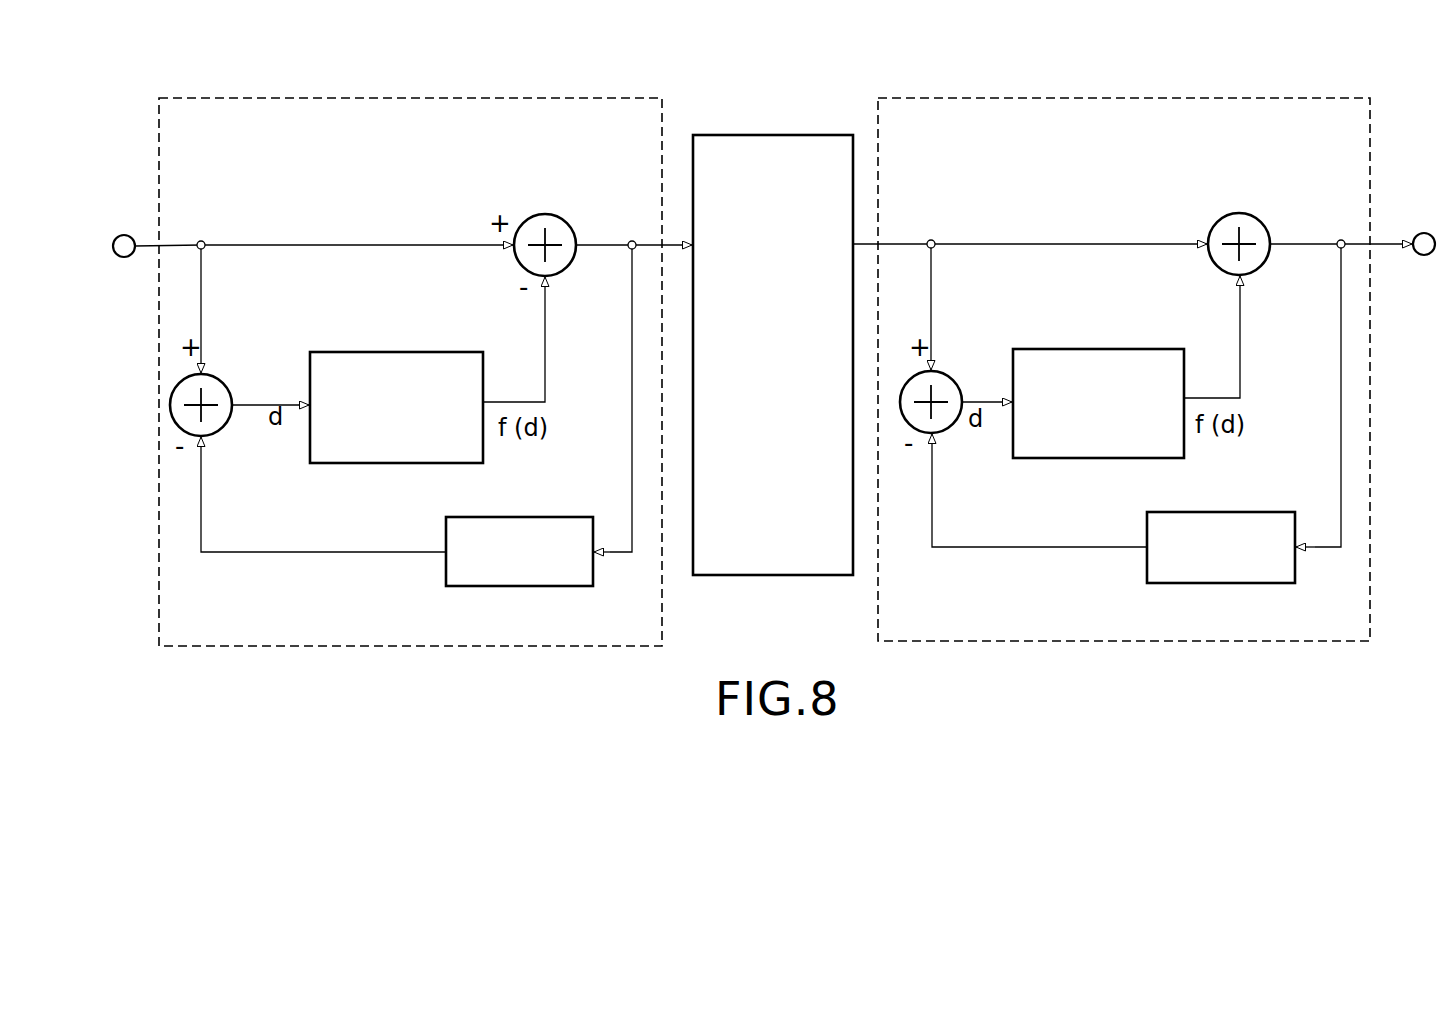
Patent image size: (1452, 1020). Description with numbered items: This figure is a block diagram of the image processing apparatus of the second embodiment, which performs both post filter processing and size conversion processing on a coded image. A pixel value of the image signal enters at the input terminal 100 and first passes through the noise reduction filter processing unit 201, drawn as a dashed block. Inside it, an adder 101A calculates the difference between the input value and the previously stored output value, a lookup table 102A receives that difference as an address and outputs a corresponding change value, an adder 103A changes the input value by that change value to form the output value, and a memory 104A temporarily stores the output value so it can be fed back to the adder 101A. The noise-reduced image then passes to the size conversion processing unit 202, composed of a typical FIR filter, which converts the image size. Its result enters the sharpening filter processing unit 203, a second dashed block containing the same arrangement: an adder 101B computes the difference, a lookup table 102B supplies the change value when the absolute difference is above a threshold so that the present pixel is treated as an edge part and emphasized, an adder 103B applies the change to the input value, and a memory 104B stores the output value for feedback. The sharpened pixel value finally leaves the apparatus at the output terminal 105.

The input terminal 100 is at (124, 235).
The adder 101A is at (224, 382).
The lookup table 102A is at (447, 352).
The adder 103A is at (555, 214).
The memory 104A is at (584, 517).
The noise reduction filter processing unit 201 is at (607, 98).
The size conversion processing unit 202 is at (793, 135).
The sharpening filter processing unit 203 is at (1152, 98).
The adder 101B is at (954, 379).
The lookup table 102B is at (1148, 349).
The adder 103B is at (1248, 213).
The memory 104B is at (1285, 512).
The output terminal 105 is at (1425, 233).